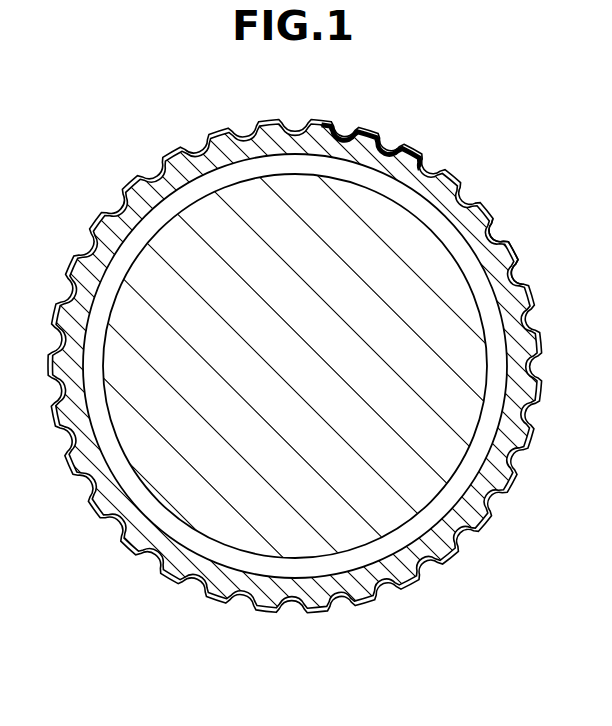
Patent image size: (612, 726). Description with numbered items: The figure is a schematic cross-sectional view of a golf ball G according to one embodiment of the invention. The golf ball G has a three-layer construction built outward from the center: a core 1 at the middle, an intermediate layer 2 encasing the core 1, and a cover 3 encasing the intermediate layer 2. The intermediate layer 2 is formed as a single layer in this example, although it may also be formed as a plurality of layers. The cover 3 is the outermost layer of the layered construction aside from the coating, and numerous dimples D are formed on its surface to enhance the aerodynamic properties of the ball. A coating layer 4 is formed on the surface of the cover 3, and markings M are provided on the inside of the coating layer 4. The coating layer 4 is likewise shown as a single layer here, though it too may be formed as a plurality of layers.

The core 1 is at (382, 485).
The intermediate layer 2 is at (410, 533).
The cover 3 is at (403, 560).
The coating layer 4 is at (387, 597).
The golf ball G is at (118, 164).
The markings M is at (399, 150).
The dimples D is at (513, 258).